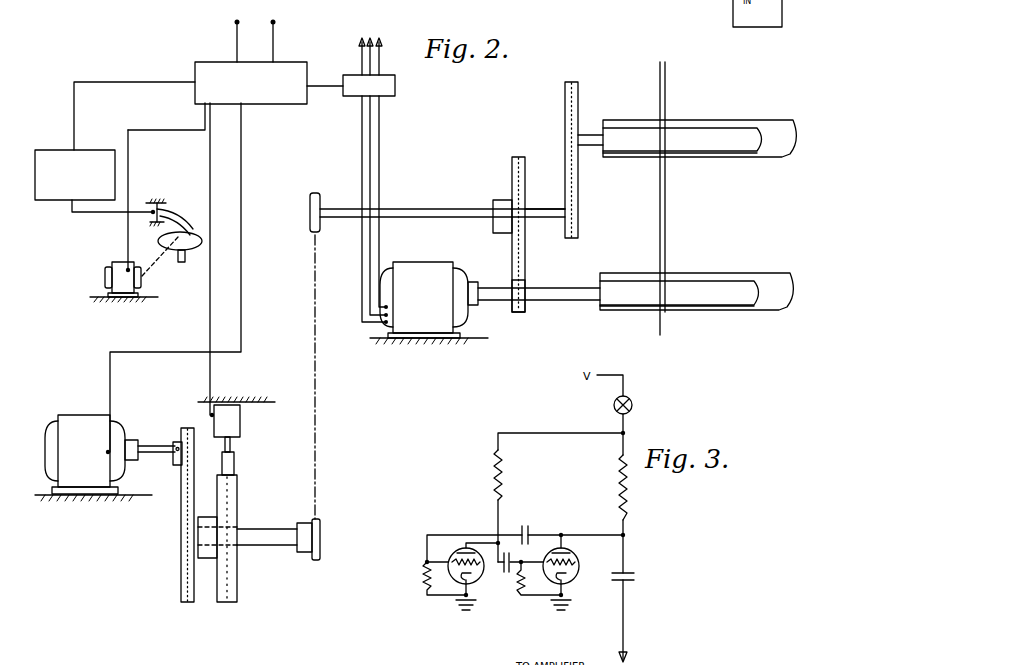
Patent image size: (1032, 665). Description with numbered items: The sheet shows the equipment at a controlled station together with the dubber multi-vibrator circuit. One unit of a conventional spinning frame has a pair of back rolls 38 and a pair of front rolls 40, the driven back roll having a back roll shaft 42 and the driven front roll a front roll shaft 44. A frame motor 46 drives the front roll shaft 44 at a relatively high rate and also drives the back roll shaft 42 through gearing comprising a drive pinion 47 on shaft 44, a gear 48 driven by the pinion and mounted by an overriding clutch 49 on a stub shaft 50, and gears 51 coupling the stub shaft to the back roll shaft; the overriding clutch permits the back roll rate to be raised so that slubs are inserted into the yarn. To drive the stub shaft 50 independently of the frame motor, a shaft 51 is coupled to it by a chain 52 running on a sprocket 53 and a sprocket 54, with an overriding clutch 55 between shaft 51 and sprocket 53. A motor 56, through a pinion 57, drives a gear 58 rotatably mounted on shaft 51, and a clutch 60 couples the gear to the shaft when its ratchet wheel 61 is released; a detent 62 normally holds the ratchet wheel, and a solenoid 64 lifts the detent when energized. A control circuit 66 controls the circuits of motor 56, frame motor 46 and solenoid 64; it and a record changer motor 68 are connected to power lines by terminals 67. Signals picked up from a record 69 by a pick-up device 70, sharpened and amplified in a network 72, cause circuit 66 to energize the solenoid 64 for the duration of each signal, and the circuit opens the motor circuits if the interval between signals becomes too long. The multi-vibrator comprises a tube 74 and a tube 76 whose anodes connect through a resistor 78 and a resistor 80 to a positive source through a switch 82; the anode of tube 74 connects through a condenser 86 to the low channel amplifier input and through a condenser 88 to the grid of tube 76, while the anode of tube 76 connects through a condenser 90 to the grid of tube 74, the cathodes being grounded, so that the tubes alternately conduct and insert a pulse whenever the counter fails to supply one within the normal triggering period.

In FIG. 2, the back rolls 38 is at (697, 128).
In FIG. 2, the front rolls 40 is at (705, 282).
In FIG. 2, the back roll shaft 42 is at (590, 133).
In FIG. 2, the front roll shaft 44 is at (568, 287).
In FIG. 2, the frame motor 46 is at (418, 268).
In FIG. 2, the drive pinion 47 is at (515, 313).
In FIG. 2, the gear 48 is at (512, 162).
In FIG. 2, the overriding clutch 49 is at (500, 200).
In FIG. 2, the stub shaft 50 is at (543, 210).
In FIG. 2, the shaft 51 is at (262, 540).
In FIG. 2, the chain 52 is at (313, 293).
In FIG. 2, the sprocket 53 is at (322, 540).
In FIG. 2, the sprocket 54 is at (310, 205).
In FIG. 2, the overriding clutch 55 is at (303, 549).
In FIG. 2, the motor 56 is at (82, 415).
In FIG. 2, the pinion 57 is at (190, 428).
In FIG. 2, the gear 58 is at (181, 517).
In FIG. 2, the clutch 60 is at (208, 560).
In FIG. 2, the ratchet wheel 61 is at (238, 495).
In FIG. 2, the detent 62 is at (232, 465).
In FIG. 2, the solenoid 64 is at (240, 420).
In FIG. 2, the circuit 66 is at (258, 104).
In FIG. 2, the terminals 67 is at (243, 23).
In FIG. 2, the record changer motor 68 is at (113, 262).
In FIG. 2, the record 69 is at (197, 250).
In FIG. 2, the pick-up device 70 is at (172, 208).
In FIG. 2, the network 72 is at (52, 150).
In FIG. 3, the tube 74 is at (575, 568).
In FIG. 3, the tube 76 is at (476, 578).
In FIG. 3, the resistor 78 is at (628, 497).
In FIG. 3, the resistor 80 is at (505, 463).
In FIG. 3, the switch 82 is at (632, 400).
In FIG. 3, the condenser 86 is at (634, 576).
In FIG. 3, the condenser 88 is at (527, 521).
In FIG. 3, the condenser 90 is at (505, 573).